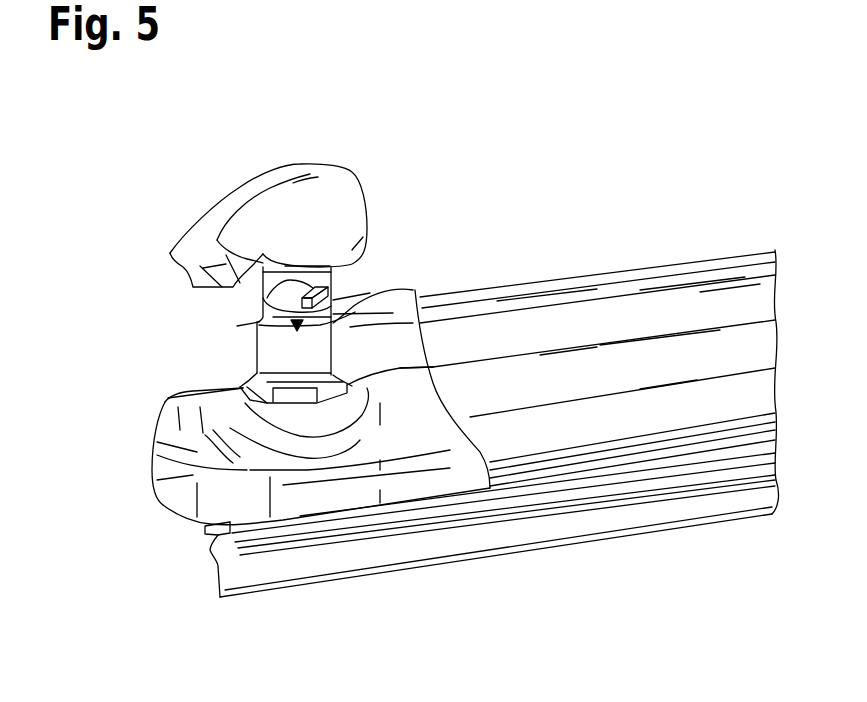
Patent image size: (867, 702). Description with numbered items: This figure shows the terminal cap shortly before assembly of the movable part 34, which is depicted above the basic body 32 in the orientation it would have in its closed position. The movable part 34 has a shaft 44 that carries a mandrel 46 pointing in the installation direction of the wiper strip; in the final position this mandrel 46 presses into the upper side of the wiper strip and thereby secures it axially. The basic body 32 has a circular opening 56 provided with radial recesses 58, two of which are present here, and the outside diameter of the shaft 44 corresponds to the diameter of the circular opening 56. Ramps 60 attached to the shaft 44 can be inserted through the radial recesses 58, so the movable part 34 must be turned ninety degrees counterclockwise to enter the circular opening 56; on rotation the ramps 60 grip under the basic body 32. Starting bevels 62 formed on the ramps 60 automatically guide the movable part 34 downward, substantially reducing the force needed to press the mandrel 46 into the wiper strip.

The basic body 32 is at (172, 472).
The movable part 34 is at (294, 162).
The shaft 44 is at (333, 271).
The mandrel 46 is at (420, 291).
The circular opening 56 is at (256, 374).
The radial recesses 58 is at (197, 390).
The ramps 60 is at (328, 292).
The starting bevels 62 is at (264, 300).